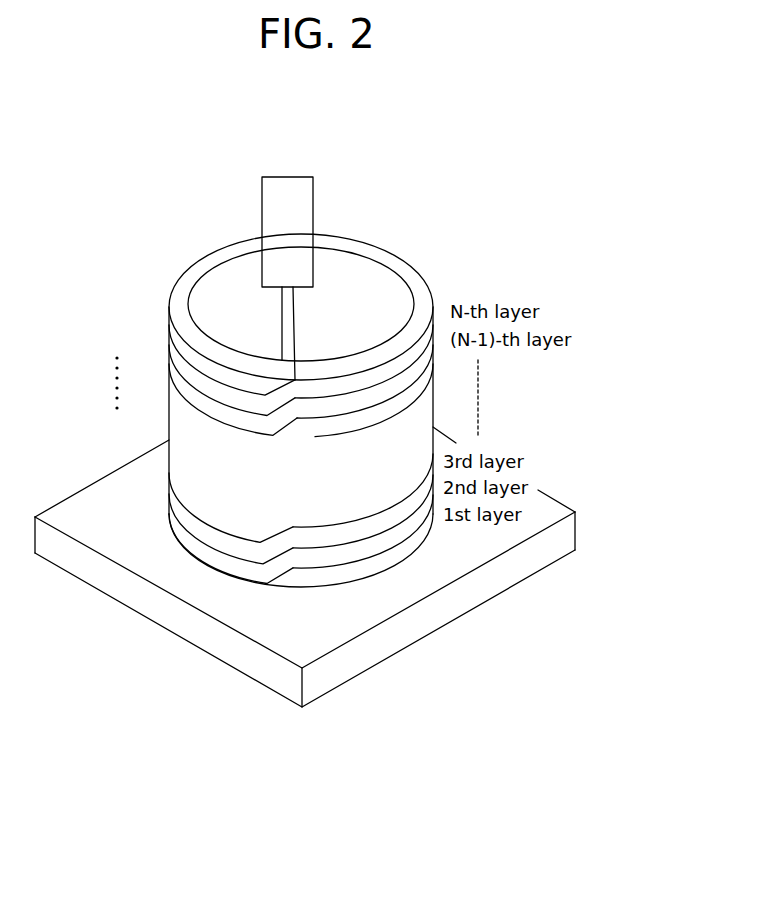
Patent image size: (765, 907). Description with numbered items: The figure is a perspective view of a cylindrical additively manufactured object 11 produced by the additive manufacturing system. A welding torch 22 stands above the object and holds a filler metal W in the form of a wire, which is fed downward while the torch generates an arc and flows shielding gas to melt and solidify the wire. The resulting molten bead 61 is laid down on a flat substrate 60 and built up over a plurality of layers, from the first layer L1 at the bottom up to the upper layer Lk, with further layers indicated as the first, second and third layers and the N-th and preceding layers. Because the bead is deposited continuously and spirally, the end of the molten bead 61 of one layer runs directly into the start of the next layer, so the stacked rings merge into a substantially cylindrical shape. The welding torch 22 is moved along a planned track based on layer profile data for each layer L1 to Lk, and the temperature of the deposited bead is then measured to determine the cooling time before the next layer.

The additively manufactured object 11 is at (233, 232).
The welding torch 22 is at (302, 200).
The filler metal (wire) W is at (297, 322).
The k-th layer Lk is at (178, 350).
The first layer L1 is at (174, 535).
The substrate 60 is at (332, 623).
The molten bead 61 is at (383, 520).